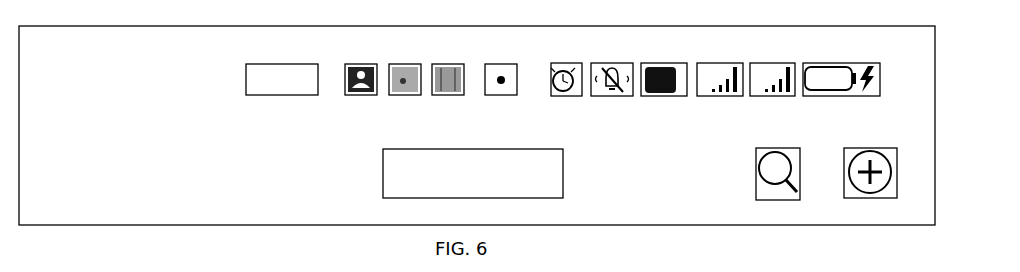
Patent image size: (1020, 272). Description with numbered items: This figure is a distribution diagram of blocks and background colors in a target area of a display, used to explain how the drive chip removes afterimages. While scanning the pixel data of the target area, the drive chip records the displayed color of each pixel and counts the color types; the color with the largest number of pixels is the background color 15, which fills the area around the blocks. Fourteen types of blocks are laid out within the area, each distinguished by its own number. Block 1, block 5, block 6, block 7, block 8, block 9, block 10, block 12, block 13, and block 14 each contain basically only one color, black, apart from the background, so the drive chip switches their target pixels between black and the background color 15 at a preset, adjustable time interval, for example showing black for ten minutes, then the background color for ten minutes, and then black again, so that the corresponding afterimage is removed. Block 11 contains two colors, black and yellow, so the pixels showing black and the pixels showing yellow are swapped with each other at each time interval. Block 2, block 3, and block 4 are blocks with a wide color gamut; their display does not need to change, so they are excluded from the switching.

The block 1 is at (283, 69).
The block 2 is at (361, 68).
The block 3 is at (405, 68).
The block 4 is at (448, 68).
The block 5 is at (501, 68).
The block 6 is at (566, 69).
The block 7 is at (612, 69).
The block 8 is at (664, 69).
The block 9 is at (720, 69).
The block 10 is at (772, 69).
The block 11 is at (841, 69).
The block 12 is at (485, 173).
The block 13 is at (775, 186).
The block 14 is at (870, 186).
The background color 15 is at (477, 125).